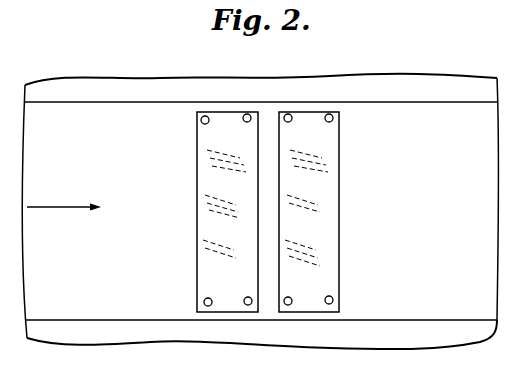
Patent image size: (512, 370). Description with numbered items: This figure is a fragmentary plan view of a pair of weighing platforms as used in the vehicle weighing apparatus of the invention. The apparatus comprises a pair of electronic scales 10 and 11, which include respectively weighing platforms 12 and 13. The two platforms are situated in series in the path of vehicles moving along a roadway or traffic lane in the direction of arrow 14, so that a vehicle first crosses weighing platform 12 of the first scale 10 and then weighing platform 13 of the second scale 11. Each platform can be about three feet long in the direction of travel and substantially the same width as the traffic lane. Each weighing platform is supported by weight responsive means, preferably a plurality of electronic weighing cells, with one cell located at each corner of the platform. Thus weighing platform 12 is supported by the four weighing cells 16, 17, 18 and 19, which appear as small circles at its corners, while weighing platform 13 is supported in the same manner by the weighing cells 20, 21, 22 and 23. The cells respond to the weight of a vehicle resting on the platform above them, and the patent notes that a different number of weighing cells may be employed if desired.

The electronic scale 10 is at (194, 150).
The electronic scale 11 is at (344, 152).
The weighing platform 12 is at (208, 198).
The weighing platform 13 is at (323, 207).
The arrow 14 is at (48, 207).
The weighing cell 16 is at (200, 121).
The weighing cell 17 is at (203, 300).
The weighing cell 18 is at (245, 298).
The weighing cell 19 is at (245, 123).
The weighing cell 20 is at (290, 123).
The weighing cell 21 is at (291, 298).
The weighing cell 22 is at (334, 298).
The weighing cell 23 is at (334, 118).